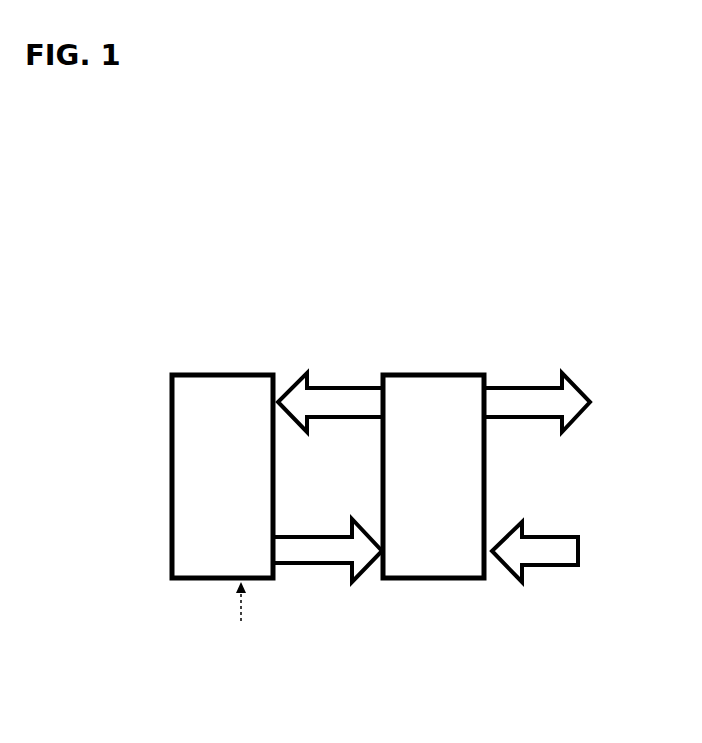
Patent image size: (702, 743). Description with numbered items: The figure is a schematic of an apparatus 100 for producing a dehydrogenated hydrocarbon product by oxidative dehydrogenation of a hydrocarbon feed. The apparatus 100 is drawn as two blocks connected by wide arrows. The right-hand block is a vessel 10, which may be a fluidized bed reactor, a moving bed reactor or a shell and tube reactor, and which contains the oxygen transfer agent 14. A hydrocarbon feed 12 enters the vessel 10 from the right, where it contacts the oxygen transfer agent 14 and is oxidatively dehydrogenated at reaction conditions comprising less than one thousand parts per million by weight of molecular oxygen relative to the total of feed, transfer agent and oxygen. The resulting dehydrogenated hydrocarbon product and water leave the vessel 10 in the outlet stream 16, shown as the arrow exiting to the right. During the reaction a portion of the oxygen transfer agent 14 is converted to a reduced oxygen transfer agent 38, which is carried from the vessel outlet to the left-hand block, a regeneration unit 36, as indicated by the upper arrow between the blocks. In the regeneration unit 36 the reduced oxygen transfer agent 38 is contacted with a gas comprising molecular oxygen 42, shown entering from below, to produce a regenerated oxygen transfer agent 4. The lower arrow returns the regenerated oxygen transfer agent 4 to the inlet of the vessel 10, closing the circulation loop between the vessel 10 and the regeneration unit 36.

The apparatus 100 is at (323, 234).
The regeneration unit 36 is at (170, 540).
The vessel 10 is at (403, 583).
The oxygen transfer agent 14 is at (427, 440).
The reduced oxygen transfer agent 38 is at (351, 396).
The stream of dehydrogenated hydrocarbon product and water 16 is at (542, 392).
The regenerated oxygen transfer agent 4 is at (312, 563).
The hydrocarbon feed stream 12 is at (570, 568).
The gas comprising molecular oxygen 42 is at (245, 605).